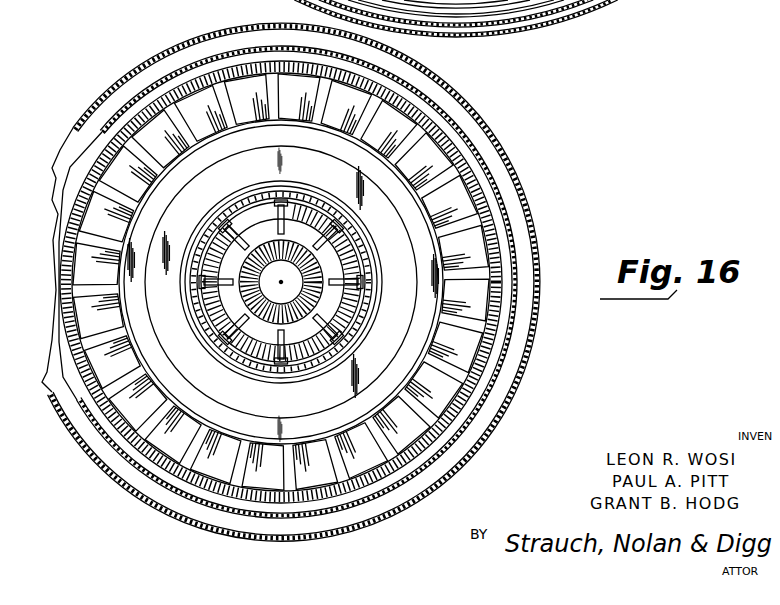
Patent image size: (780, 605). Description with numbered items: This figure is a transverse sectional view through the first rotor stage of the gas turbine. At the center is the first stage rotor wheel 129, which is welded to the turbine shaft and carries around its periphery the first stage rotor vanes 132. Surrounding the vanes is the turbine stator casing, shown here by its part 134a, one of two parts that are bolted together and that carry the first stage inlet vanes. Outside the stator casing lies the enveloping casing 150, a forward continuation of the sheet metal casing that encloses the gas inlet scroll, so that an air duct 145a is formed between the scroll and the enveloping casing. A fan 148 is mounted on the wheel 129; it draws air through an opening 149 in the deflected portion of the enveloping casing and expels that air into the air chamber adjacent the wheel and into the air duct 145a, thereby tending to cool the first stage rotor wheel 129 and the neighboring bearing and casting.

The rotor wheel 129 is at (296, 282).
The vanes 132 is at (321, 303).
The turbine stator casing part 134a is at (320, 268).
The air duct 145a is at (297, 284).
The fan 148 is at (266, 265).
The opening 149 is at (305, 282).
The enveloping casing 150 is at (294, 292).